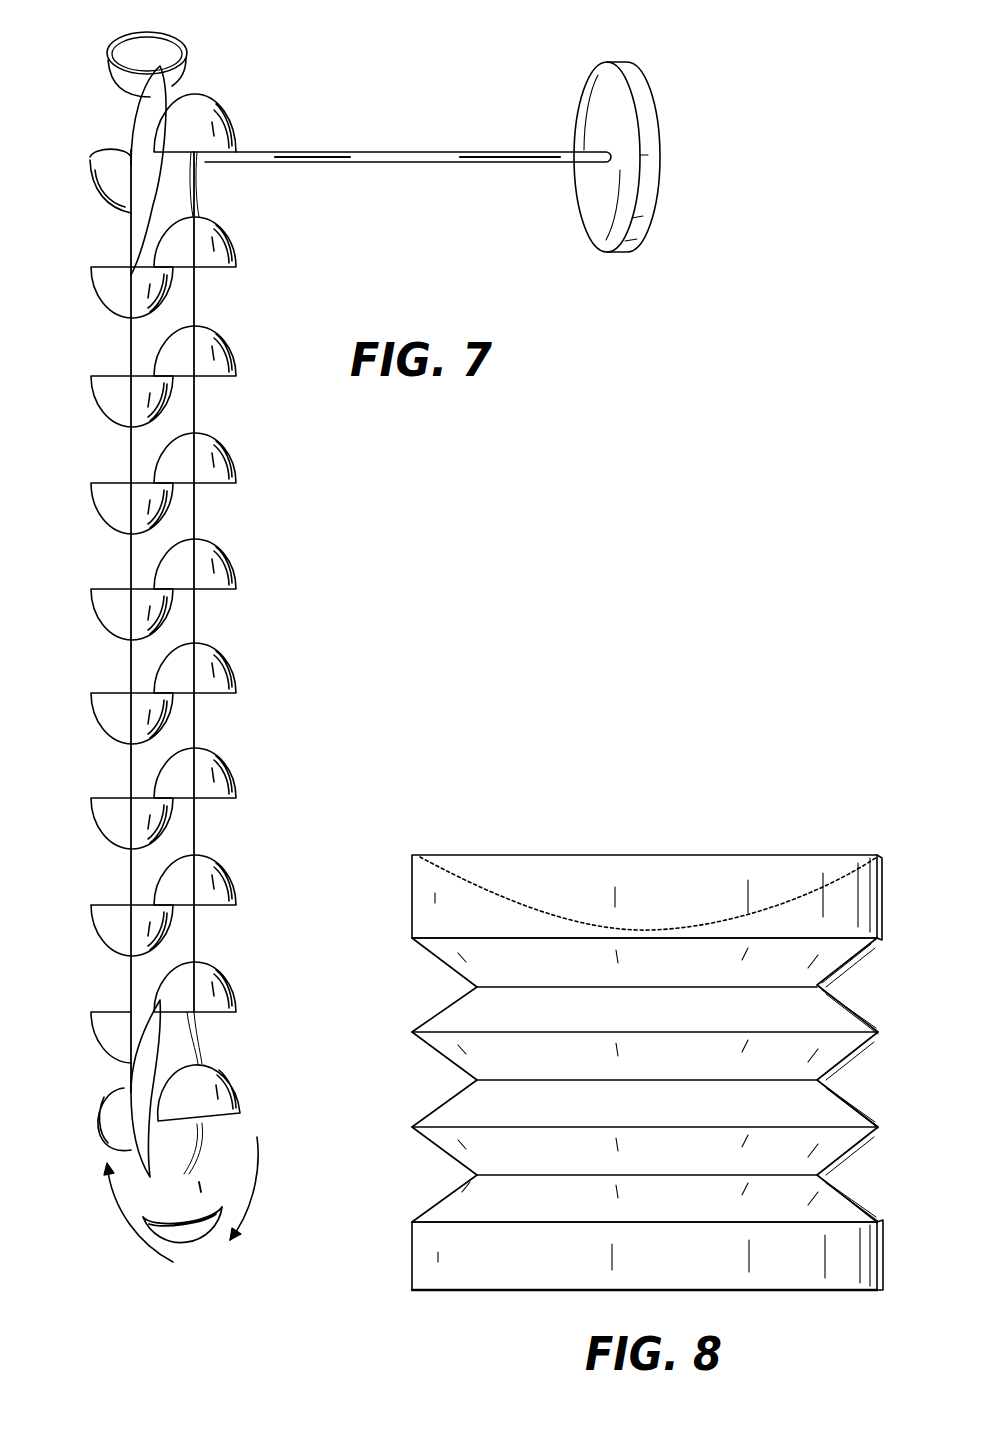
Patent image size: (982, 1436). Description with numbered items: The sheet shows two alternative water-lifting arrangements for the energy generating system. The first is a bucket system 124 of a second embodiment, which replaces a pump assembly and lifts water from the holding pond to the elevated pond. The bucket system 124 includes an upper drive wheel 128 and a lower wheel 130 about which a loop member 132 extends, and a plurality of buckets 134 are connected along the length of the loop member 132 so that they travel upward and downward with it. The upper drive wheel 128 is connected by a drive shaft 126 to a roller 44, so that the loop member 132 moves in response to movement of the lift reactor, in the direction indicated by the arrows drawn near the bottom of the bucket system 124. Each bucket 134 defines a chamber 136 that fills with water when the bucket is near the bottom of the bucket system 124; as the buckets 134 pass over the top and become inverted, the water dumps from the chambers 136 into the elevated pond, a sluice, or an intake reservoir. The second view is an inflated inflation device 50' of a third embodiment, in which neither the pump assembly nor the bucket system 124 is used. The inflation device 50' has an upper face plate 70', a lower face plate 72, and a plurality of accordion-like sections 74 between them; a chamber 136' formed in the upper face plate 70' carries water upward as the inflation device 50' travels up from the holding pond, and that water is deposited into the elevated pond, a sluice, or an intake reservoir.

In FIG. 7, the roller 44 is at (652, 95).
In FIG. 7, the bucket system 124 is at (305, 458).
In FIG. 7, the drive shaft 126 is at (382, 152).
In FIG. 7, the upper drive wheel 128 is at (142, 130).
In FIG. 7, the lower wheel 130 is at (150, 1092).
In FIG. 7, the loop member 132 is at (194, 412).
In FIG. 7, the buckets 134 is at (112, 76).
In FIG. 7, the chamber 136 is at (194, 47).
In FIG. 8, the inflation device 50' is at (644, 997).
In FIG. 8, the upper face plate 70' is at (668, 875).
In FIG. 8, the lower face plate 72 is at (770, 1292).
In FIG. 8, the accordion-like sections 74 is at (432, 1018).
In FIG. 8, the chamber 136' is at (648, 856).